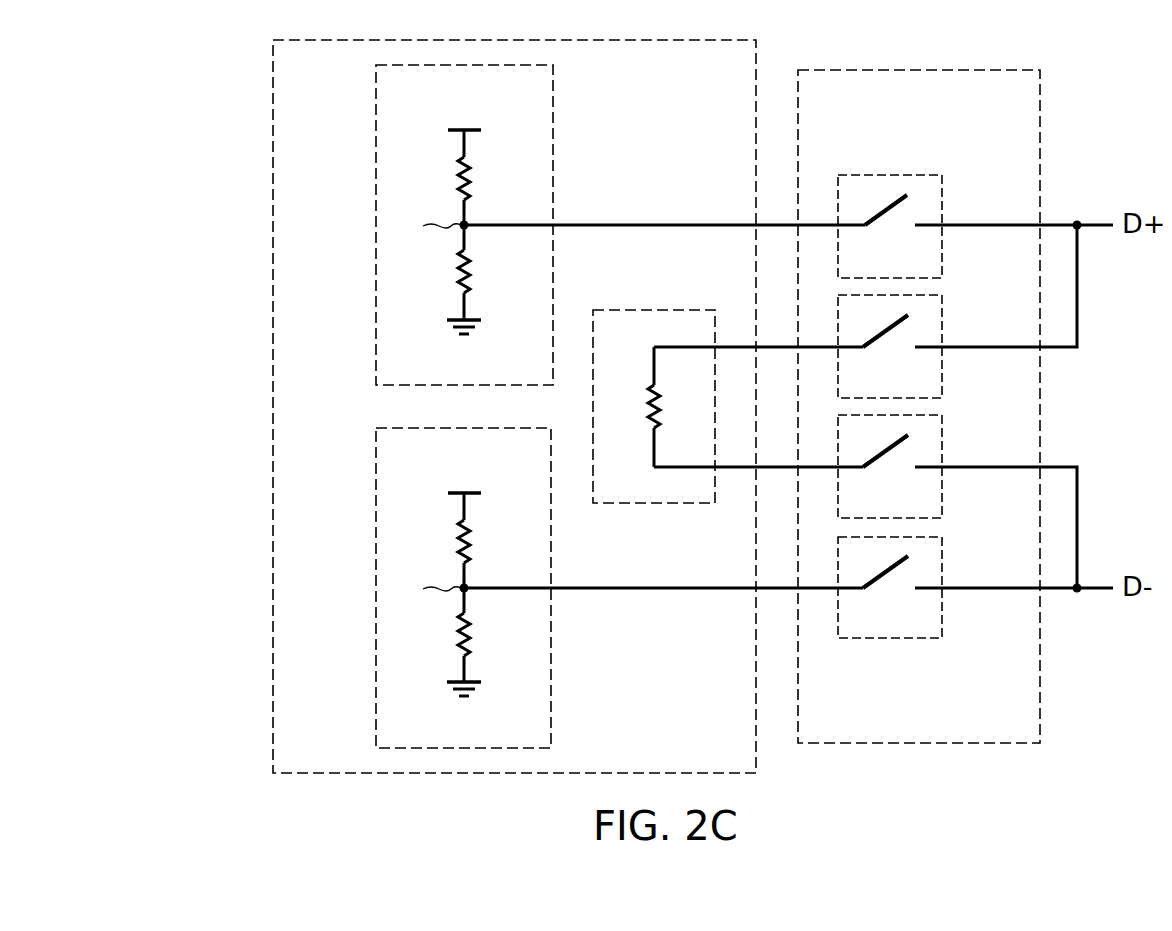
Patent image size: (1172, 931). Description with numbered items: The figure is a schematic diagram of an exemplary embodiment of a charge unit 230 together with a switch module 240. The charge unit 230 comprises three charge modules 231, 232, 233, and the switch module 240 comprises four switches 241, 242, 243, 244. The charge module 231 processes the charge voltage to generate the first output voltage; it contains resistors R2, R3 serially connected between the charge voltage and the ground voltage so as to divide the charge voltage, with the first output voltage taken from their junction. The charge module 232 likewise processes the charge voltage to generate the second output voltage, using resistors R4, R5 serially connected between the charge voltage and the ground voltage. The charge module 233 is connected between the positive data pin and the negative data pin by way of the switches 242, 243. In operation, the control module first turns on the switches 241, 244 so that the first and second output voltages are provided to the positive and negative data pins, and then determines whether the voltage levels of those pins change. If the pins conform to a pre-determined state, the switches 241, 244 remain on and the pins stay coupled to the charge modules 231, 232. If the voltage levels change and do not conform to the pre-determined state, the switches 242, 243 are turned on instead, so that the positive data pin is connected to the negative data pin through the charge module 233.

The charge unit 230 is at (273, 405).
The charge module 231 is at (421, 225).
The charge module 232 is at (419, 588).
The charge module 233 is at (654, 306).
The switch module 240 is at (966, 406).
The switch 241 is at (891, 171).
The switch 242 is at (942, 380).
The switch 243 is at (942, 432).
The switch 244 is at (890, 640).
The resistor R2 is at (471, 179).
The resistor R3 is at (471, 273).
The resistor R4 is at (471, 543).
The resistor R5 is at (471, 636).